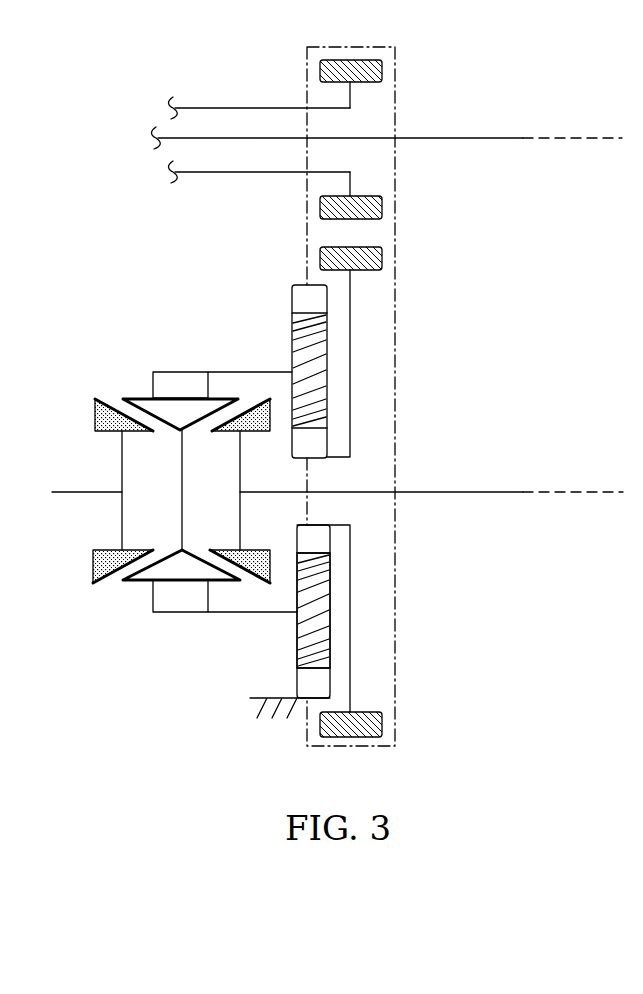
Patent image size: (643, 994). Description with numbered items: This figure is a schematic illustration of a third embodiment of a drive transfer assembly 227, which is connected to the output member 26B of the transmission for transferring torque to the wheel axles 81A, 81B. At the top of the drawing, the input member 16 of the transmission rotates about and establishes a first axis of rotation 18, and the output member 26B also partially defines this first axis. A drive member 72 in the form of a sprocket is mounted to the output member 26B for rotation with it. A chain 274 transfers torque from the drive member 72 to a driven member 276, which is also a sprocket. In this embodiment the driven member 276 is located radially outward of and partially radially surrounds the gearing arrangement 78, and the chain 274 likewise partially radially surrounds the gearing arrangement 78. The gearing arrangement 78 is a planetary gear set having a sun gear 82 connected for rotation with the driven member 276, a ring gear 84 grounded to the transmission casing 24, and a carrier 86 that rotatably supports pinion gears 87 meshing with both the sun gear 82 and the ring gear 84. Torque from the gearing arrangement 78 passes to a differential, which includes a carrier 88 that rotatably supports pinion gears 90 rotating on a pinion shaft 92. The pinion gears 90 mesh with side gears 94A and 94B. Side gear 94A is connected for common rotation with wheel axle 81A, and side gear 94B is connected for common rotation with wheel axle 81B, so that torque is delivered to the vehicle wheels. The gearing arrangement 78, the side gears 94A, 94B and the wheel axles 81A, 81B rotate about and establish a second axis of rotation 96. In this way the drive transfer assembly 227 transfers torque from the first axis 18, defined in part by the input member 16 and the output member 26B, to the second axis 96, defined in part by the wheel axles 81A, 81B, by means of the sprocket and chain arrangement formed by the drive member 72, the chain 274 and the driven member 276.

The input member 16 is at (443, 138).
The axis of rotation 18 is at (563, 138).
The transmission casing 24 is at (253, 700).
The output member 26B is at (247, 108).
The drive member 72 is at (365, 60).
The gearing arrangement 78 is at (268, 343).
The wheel axle 81A is at (87, 492).
The wheel axle 81B is at (436, 492).
The sun gear 82 is at (332, 540).
The ring gear 84 is at (332, 683).
The carrier 86 is at (253, 612).
The pinion gears 87 is at (332, 595).
The carrier 88 is at (180, 372).
The pinion gears 90 is at (140, 583).
The pinion shaft 92 is at (180, 523).
The side gear 94A is at (93, 415).
The side gear 94B is at (243, 550).
The second axis of rotation 96 is at (575, 492).
The drive transfer assembly 227 is at (520, 341).
The chain 274 is at (395, 318).
The driven member 276 is at (382, 259).